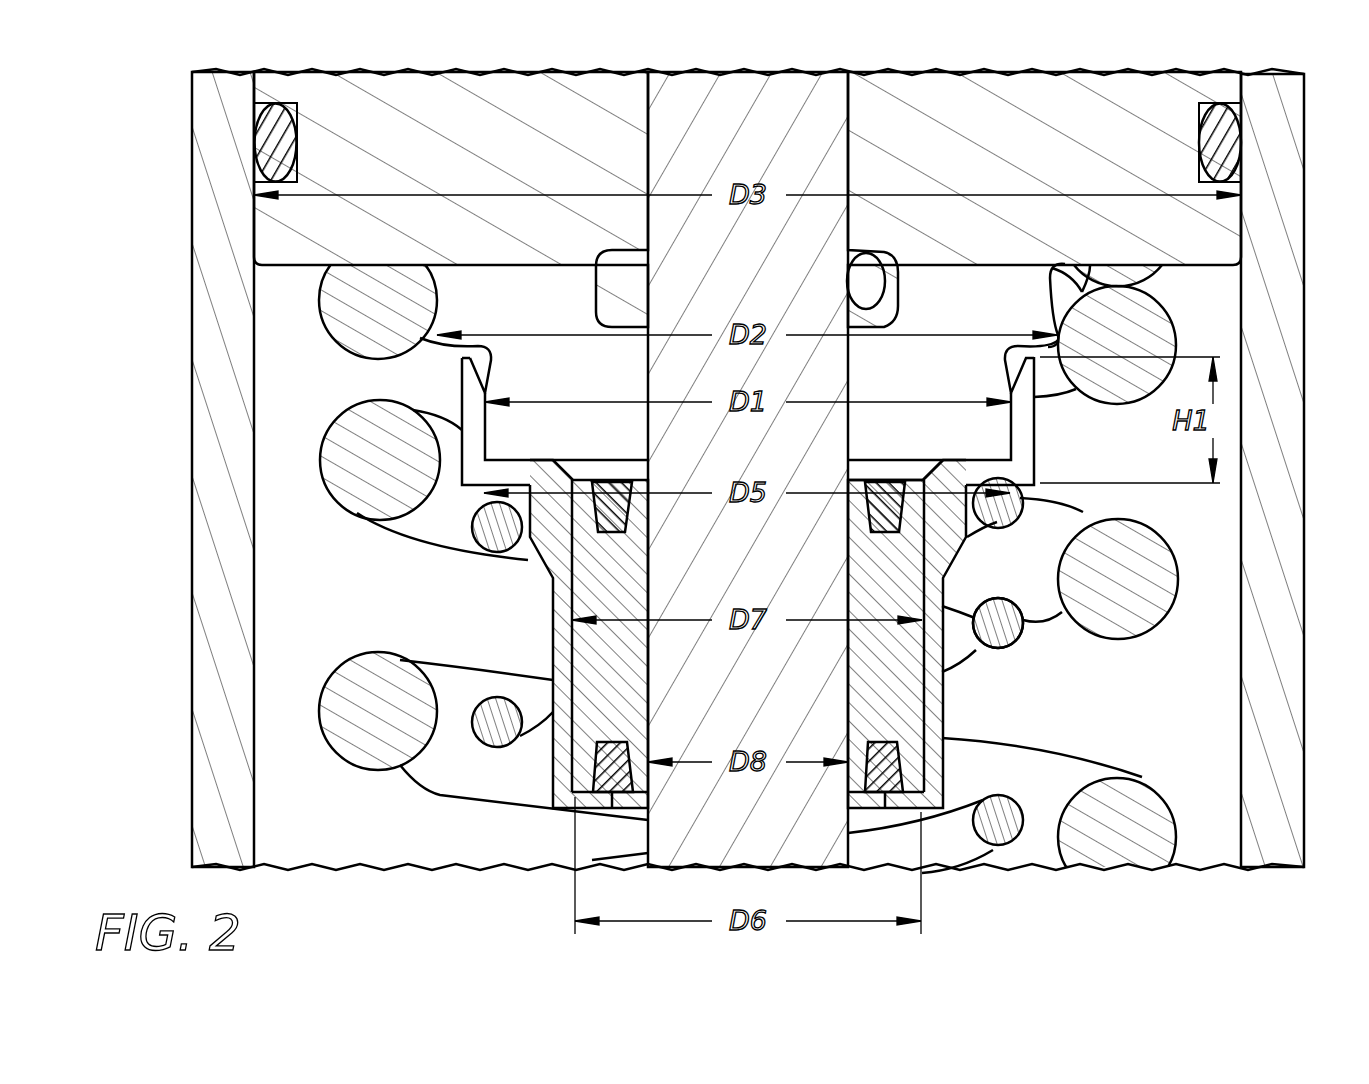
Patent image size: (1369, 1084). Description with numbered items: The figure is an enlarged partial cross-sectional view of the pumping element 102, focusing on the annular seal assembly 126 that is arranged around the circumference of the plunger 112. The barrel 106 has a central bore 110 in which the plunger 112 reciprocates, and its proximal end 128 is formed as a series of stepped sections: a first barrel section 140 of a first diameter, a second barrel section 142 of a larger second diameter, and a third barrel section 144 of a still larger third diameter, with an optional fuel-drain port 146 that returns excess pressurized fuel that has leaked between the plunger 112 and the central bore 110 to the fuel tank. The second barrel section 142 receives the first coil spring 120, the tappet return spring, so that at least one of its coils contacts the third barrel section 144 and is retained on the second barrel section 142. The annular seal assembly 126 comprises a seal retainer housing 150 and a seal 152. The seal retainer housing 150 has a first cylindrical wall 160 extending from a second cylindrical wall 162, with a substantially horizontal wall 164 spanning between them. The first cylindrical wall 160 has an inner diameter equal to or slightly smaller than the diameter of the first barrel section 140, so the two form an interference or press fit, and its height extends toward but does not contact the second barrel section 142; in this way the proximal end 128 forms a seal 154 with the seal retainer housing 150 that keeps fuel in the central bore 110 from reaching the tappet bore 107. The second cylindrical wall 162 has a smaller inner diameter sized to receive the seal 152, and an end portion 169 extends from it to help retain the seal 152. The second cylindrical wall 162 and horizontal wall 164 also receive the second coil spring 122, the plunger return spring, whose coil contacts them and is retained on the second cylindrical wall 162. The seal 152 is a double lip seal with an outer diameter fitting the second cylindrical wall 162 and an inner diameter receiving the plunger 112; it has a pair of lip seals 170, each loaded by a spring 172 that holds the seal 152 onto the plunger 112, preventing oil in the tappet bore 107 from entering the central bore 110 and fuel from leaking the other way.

The pumping element 102 is at (152, 59).
The barrel 106 is at (515, 279).
The tappet bore 107 is at (1200, 710).
The central bore 110 is at (647, 358).
The plunger 112 is at (682, 148).
The first coil spring 120 is at (1142, 625).
The second coil spring 122 is at (1012, 638).
The annular seal assembly 126 is at (368, 550).
The proximal end 128 is at (1010, 432).
The first barrel section 140 is at (487, 418).
The second barrel section 142 is at (1084, 284).
The third barrel section 144 is at (1243, 233).
The fuel-drain port 146 is at (888, 268).
The seal retainer housing 150 is at (556, 598).
The seal 152 is at (594, 703).
The seal 154 is at (462, 432).
The first cylindrical wall 160 is at (466, 385).
The second cylindrical wall 162 is at (556, 651).
The horizontal wall 164 is at (938, 470).
The end portion 169 is at (896, 802).
The lip seals 170 is at (585, 486).
The spring 172 is at (610, 511).